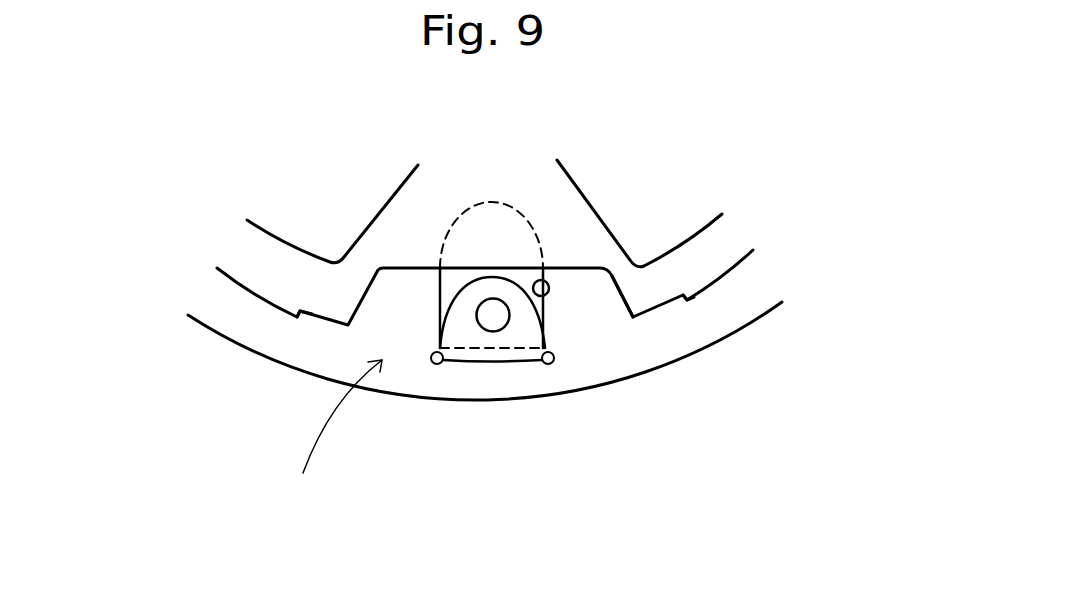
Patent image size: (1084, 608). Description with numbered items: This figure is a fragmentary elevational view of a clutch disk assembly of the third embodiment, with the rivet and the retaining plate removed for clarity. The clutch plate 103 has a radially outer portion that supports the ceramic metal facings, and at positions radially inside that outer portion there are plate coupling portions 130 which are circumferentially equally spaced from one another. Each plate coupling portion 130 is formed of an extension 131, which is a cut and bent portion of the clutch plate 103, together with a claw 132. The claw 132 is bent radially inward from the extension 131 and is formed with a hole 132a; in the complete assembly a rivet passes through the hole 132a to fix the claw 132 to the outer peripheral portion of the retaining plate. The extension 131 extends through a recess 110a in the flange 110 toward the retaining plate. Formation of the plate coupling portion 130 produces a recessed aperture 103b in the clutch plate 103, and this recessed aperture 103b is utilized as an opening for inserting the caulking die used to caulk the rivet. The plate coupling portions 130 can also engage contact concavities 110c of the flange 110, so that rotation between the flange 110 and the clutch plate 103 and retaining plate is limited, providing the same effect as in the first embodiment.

The clutch plate 103 is at (660, 347).
The recessed aperture 103b is at (548, 296).
The flange 110 is at (558, 212).
The recess 110a is at (618, 293).
The contact concavity 110c is at (303, 316).
The plate coupling portion 130 is at (328, 436).
The extension 131 is at (506, 362).
The claw 132 is at (455, 311).
The hole 132a is at (487, 322).